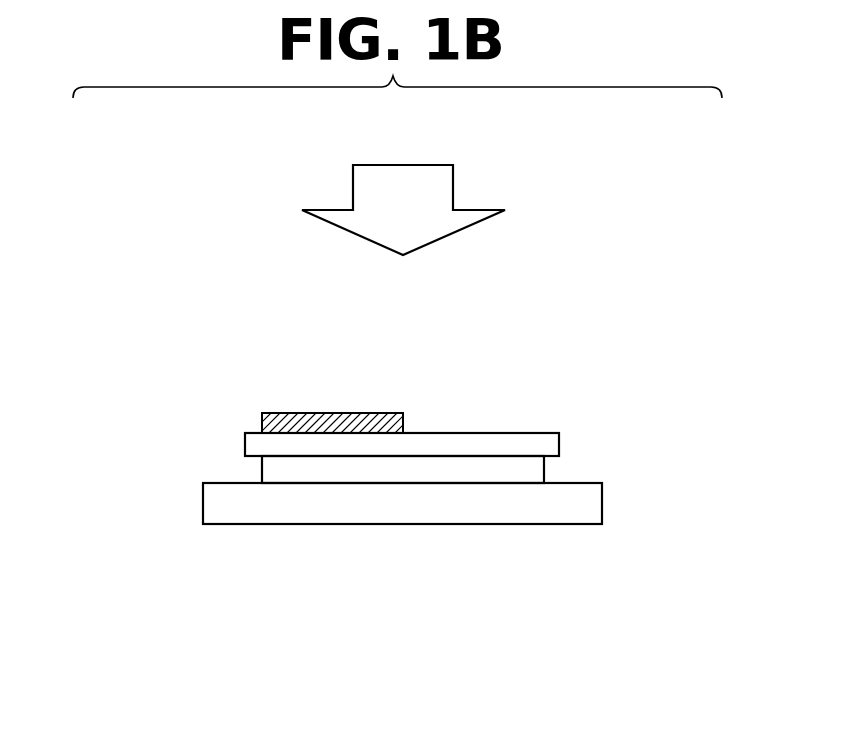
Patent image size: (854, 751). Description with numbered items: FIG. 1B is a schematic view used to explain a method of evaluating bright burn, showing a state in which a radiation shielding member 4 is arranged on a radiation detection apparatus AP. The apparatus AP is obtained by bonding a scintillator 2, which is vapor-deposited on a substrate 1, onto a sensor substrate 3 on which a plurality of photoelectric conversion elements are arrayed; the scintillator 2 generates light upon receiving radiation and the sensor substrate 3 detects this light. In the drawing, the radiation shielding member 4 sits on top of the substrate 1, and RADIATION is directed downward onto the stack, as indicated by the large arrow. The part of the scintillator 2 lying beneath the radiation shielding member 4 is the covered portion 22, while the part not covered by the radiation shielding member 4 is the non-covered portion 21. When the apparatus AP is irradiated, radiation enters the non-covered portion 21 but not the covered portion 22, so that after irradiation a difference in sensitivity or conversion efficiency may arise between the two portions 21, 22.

The substrate 1 is at (561, 443).
The scintillator 2 is at (403, 548).
The non-covered portion 21 is at (466, 527).
The covered portion 22 is at (330, 470).
The sensor substrate 3 is at (603, 502).
The radiation shielding member 4 is at (318, 413).
The radiation detection apparatus AP is at (181, 522).
The radiation RADIATION is at (448, 200).